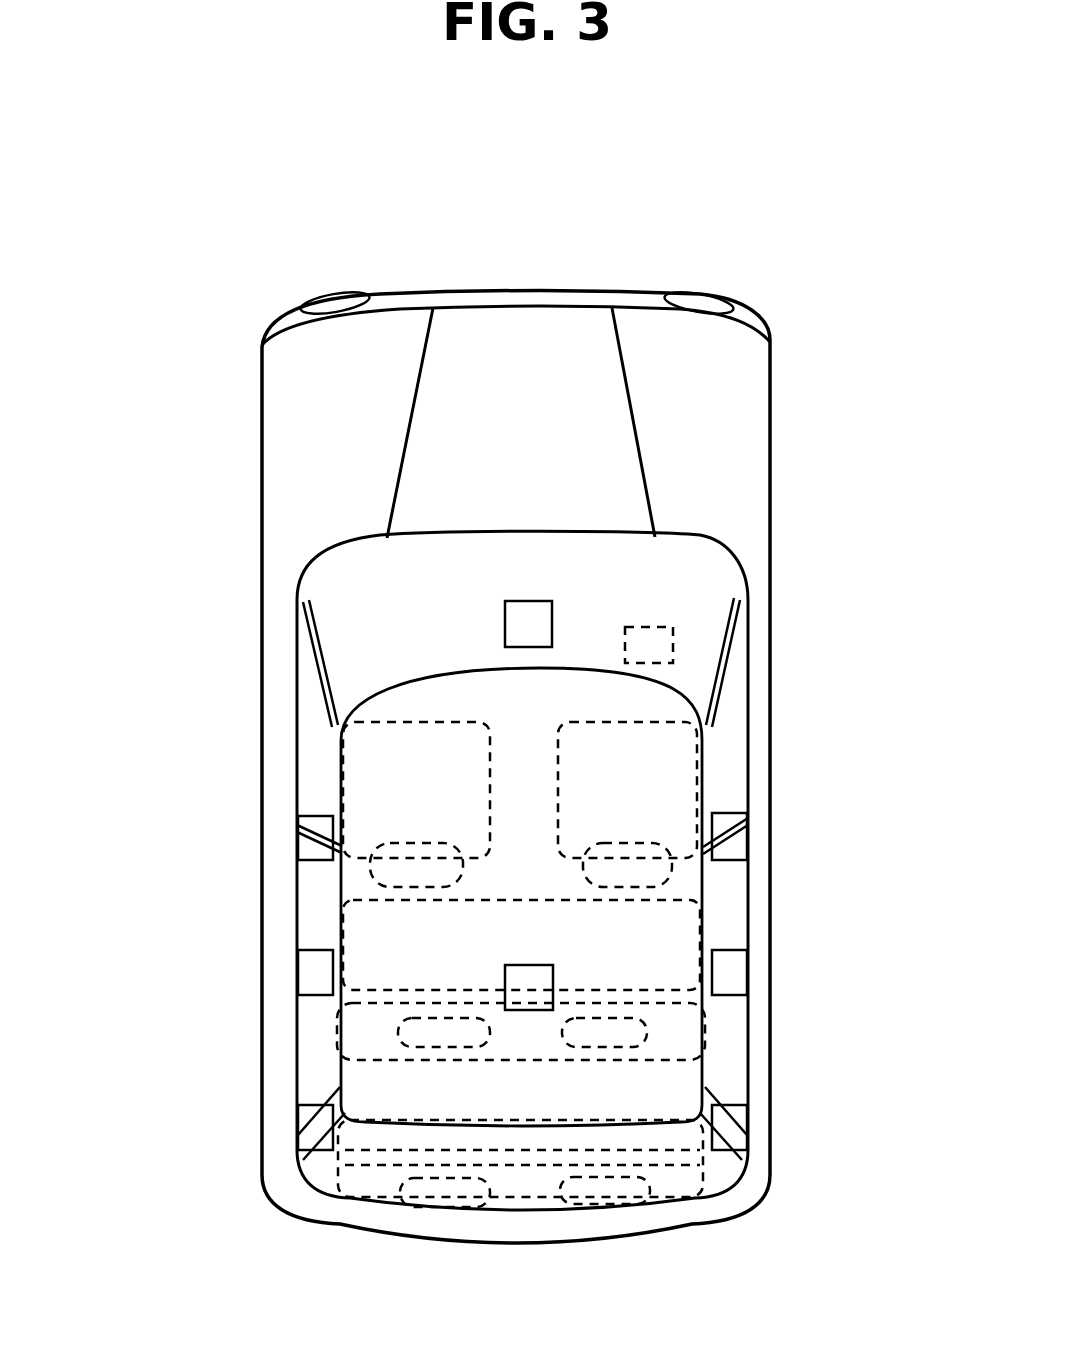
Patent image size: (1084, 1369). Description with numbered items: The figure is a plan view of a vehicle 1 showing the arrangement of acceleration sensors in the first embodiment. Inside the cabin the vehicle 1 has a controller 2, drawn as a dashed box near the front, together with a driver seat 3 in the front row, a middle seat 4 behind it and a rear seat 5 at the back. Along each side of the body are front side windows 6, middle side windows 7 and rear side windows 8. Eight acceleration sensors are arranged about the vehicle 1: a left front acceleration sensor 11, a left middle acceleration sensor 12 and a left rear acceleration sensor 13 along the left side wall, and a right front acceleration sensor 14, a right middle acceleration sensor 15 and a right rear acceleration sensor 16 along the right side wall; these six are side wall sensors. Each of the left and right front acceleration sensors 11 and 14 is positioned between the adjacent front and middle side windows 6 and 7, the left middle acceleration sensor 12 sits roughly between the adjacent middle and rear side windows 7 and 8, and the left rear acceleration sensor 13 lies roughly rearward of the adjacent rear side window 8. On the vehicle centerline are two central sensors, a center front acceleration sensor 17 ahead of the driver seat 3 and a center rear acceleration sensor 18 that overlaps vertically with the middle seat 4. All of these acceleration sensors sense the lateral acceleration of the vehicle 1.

The vehicle 1 is at (773, 447).
The controller 2 is at (673, 635).
The driver seat 3 is at (673, 757).
The middle seat 4 is at (670, 925).
The rear seat 5 is at (683, 1100).
The front side windows 6 is at (317, 823).
The middle side windows 7 is at (318, 912).
The rear side windows 8 is at (307, 1042).
The left front acceleration sensor 11 is at (320, 848).
The left middle acceleration sensor 12 is at (318, 975).
The left rear acceleration sensor 13 is at (307, 1140).
The right front acceleration sensor 14 is at (733, 842).
The right middle acceleration sensor 15 is at (728, 972).
The right rear acceleration sensor 16 is at (725, 1127).
The center front acceleration sensor 17 is at (528, 627).
The center rear acceleration sensor 18 is at (530, 1010).